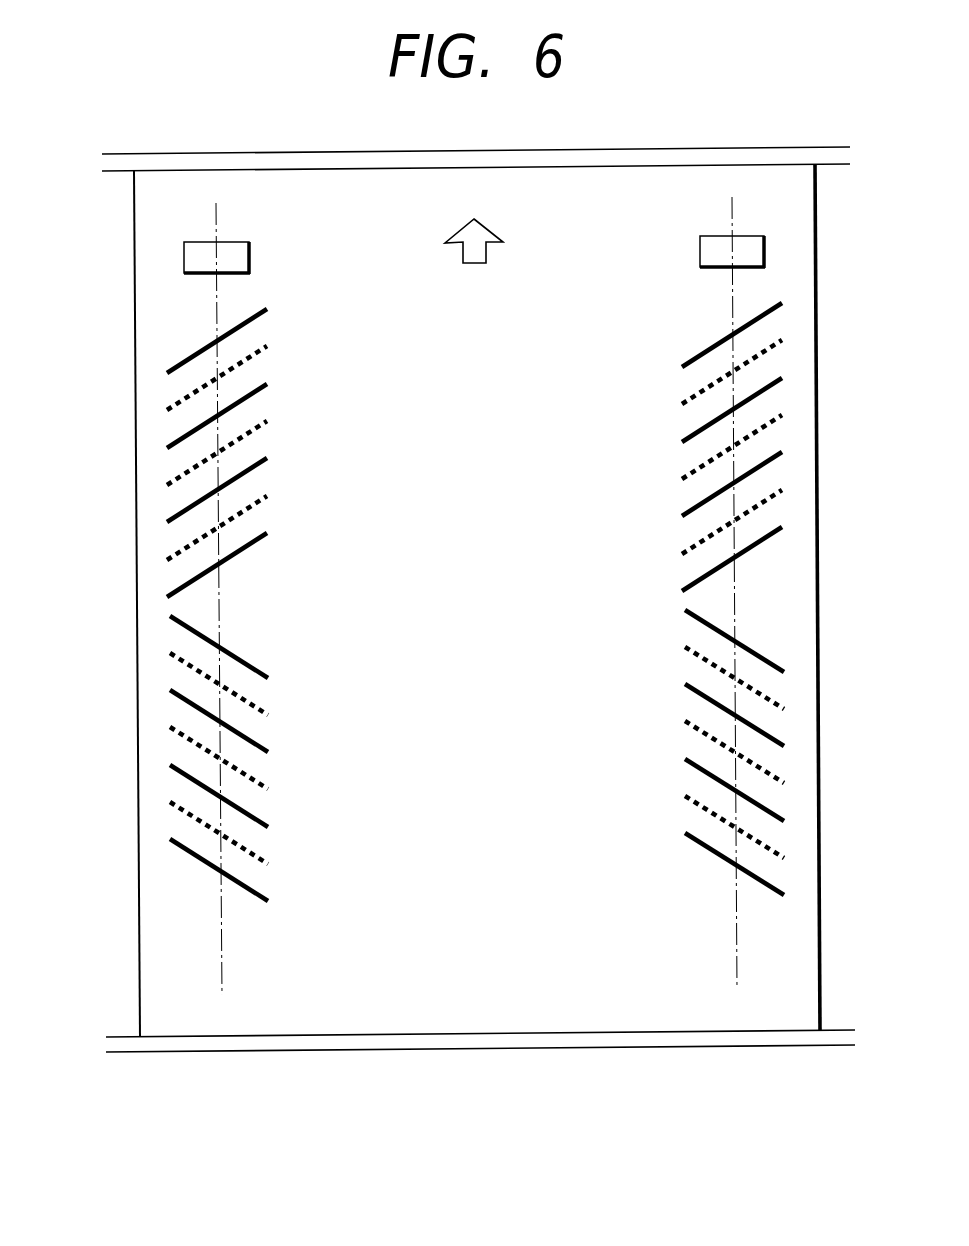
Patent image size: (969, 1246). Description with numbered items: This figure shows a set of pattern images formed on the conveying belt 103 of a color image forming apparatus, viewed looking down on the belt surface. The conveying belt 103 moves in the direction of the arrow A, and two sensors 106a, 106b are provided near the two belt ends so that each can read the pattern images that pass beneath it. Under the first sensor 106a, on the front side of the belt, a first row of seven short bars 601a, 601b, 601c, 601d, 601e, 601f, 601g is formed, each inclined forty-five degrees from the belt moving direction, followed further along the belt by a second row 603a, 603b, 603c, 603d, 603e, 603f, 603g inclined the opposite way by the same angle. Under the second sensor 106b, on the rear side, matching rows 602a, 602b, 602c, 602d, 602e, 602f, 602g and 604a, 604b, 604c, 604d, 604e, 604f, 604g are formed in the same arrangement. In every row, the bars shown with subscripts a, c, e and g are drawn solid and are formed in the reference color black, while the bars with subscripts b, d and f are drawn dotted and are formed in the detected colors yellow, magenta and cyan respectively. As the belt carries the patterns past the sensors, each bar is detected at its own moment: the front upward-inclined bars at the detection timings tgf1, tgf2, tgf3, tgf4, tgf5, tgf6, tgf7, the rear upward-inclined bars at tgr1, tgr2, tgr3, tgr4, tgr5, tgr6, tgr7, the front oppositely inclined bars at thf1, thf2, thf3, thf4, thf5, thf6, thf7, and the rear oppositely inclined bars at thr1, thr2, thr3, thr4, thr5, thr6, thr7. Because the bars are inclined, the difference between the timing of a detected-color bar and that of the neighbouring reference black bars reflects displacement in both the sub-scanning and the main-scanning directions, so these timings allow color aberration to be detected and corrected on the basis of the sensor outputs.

The conveying belt 103 is at (460, 1010).
The sensor 106a is at (184, 258).
The sensor 106b is at (764, 252).
The arrow A is at (485, 245).
The pattern image 601a is at (214, 341).
The pattern image 601b is at (214, 378).
The pattern image 601c is at (214, 416).
The pattern image 601d is at (214, 453).
The pattern image 601e is at (214, 490).
The pattern image 601f is at (216, 528).
The pattern image 601g is at (214, 565).
The pattern image 602a is at (736, 335).
The pattern image 602b is at (736, 372).
The pattern image 602c is at (736, 410).
The pattern image 602d is at (736, 447).
The pattern image 602e is at (736, 484).
The pattern image 602f is at (735, 522).
The pattern image 602g is at (736, 559).
The pattern image 603a is at (216, 647).
The pattern image 603b is at (216, 684).
The pattern image 603c is at (216, 721).
The pattern image 603d is at (216, 758).
The pattern image 603e is at (216, 796).
The pattern image 603f is at (218, 833).
The pattern image 603g is at (216, 870).
The pattern image 604a is at (740, 641).
The pattern image 604b is at (740, 678).
The pattern image 604c is at (740, 715).
The pattern image 604d is at (740, 752).
The pattern image 604e is at (740, 790).
The pattern image 604f is at (738, 827).
The pattern image 604g is at (740, 864).
The detection timing tgf1 is at (220, 339).
The detection timing tgf2 is at (220, 378).
The detection timing tgf3 is at (220, 415).
The detection timing tgf4 is at (220, 452).
The detection timing tgf5 is at (220, 489).
The detection timing tgf6 is at (220, 527).
The detection timing tgf7 is at (220, 563).
The detection timing tgr1 is at (733, 335).
The detection timing tgr2 is at (733, 372).
The detection timing tgr3 is at (733, 410).
The detection timing tgr4 is at (733, 447).
The detection timing tgr5 is at (733, 484).
The detection timing tgr6 is at (733, 522).
The detection timing tgr7 is at (733, 559).
The detection timing thf1 is at (223, 647).
The detection timing thf2 is at (223, 684).
The detection timing thf3 is at (223, 719).
The detection timing thf4 is at (223, 756).
The detection timing thf5 is at (223, 794).
The detection timing thf6 is at (223, 831).
The detection timing thf7 is at (223, 868).
The detection timing thr1 is at (733, 642).
The detection timing thr2 is at (733, 679).
The detection timing thr3 is at (733, 717).
The detection timing thr4 is at (733, 754).
The detection timing thr5 is at (733, 791).
The detection timing thr6 is at (733, 829).
The detection timing thr7 is at (733, 866).